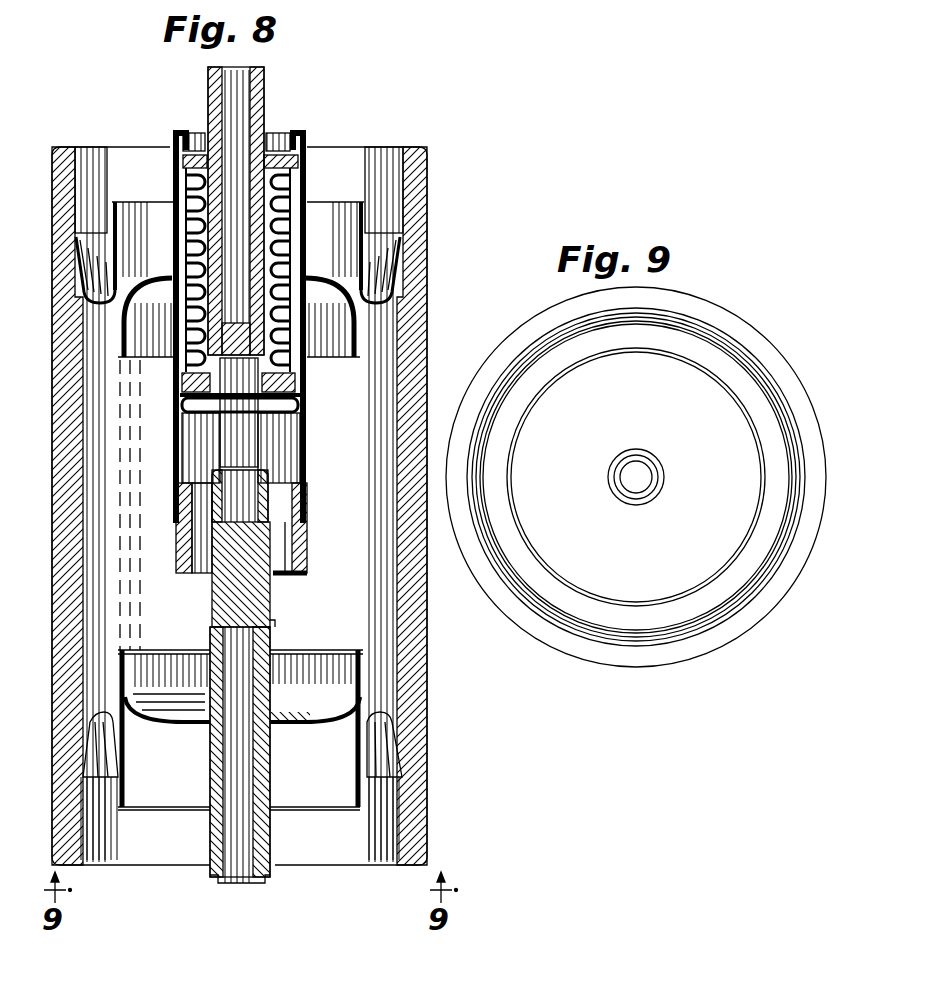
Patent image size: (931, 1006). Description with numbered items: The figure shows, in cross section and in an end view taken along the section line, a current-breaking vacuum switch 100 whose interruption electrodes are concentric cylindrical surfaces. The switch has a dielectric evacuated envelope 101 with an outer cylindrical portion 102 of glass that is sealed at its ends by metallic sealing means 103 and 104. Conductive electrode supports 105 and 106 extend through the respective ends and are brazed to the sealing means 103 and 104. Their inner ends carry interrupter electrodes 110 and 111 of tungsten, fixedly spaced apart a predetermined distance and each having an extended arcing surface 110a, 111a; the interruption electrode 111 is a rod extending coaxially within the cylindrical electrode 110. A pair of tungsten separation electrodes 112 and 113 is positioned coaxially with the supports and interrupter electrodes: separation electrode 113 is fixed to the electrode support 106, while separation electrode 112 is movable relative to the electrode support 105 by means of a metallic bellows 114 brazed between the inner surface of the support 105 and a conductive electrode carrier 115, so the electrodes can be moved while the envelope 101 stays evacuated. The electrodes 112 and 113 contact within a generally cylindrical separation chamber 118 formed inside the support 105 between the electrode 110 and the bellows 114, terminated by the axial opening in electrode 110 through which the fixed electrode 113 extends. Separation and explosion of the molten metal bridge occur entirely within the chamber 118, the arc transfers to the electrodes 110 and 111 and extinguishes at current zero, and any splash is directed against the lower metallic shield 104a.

In FIG. 8, the current-breaking vacuum switch 100 is at (106, 108).
In FIG. 9, the current-breaking vacuum switch 100 is at (779, 280).
In FIG. 8, the dielectric evacuated envelope 101 is at (432, 692).
In FIG. 9, the dielectric evacuated envelope 101 is at (705, 650).
In FIG. 8, the outer cylindrical portion 102 is at (398, 230).
In FIG. 9, the outer cylindrical portion 102 is at (547, 317).
In FIG. 8, the metallic sealing means 103 is at (363, 212).
In FIG. 8, the metallic sealing means 104 is at (400, 773).
In FIG. 9, the metallic sealing means 104 is at (687, 617).
In FIG. 8, the lower metallic shield 104a is at (360, 668).
In FIG. 8, the electrode support 105 is at (283, 187).
In FIG. 8, the electrode support 106 is at (210, 868).
In FIG. 9, the electrode support 106 is at (630, 507).
In FIG. 8, the interrupter electrode 110 is at (300, 538).
In FIG. 8, the extended arcing surface 110a is at (290, 557).
In FIG. 8, the interrupter electrode 111 is at (272, 587).
In FIG. 8, the extended arcing surface 111a is at (273, 562).
In FIG. 8, the separation electrode 112 is at (225, 430).
In FIG. 8, the separation electrode 113 is at (233, 487).
In FIG. 8, the metallic bellows 114 is at (352, 145).
In FIG. 8, the conductive electrode carrier 115 is at (265, 97).
In FIG. 8, the separation chamber 118 is at (197, 455).